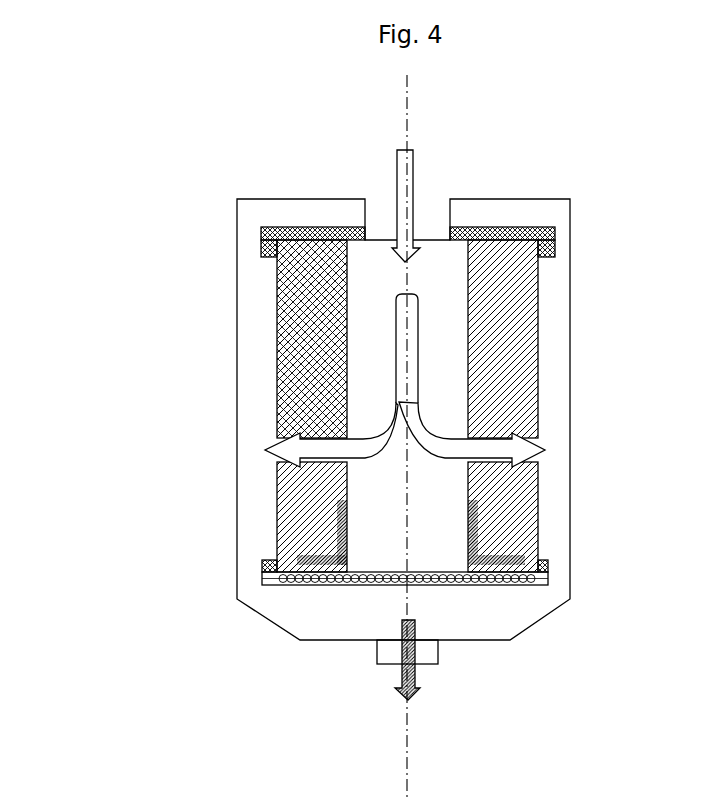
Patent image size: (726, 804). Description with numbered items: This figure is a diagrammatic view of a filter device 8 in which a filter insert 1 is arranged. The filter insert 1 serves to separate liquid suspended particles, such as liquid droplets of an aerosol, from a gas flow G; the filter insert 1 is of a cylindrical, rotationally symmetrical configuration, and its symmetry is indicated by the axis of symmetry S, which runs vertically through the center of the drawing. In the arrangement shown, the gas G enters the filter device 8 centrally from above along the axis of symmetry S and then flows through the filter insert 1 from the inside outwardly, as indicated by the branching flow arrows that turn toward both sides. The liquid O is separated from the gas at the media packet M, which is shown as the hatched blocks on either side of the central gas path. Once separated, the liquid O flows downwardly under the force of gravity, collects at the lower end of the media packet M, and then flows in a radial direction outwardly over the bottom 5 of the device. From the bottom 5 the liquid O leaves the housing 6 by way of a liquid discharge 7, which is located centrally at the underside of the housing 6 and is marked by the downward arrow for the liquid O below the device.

The filter insert 1 is at (255, 368).
The bottom 5 is at (548, 572).
The housing 6 is at (570, 463).
The liquid discharge 7 is at (438, 652).
The filter device 8 is at (625, 179).
The media packet M is at (512, 296).
The gas flow G is at (405, 308).
The liquid O is at (467, 513).
The axis of symmetry S is at (423, 437).